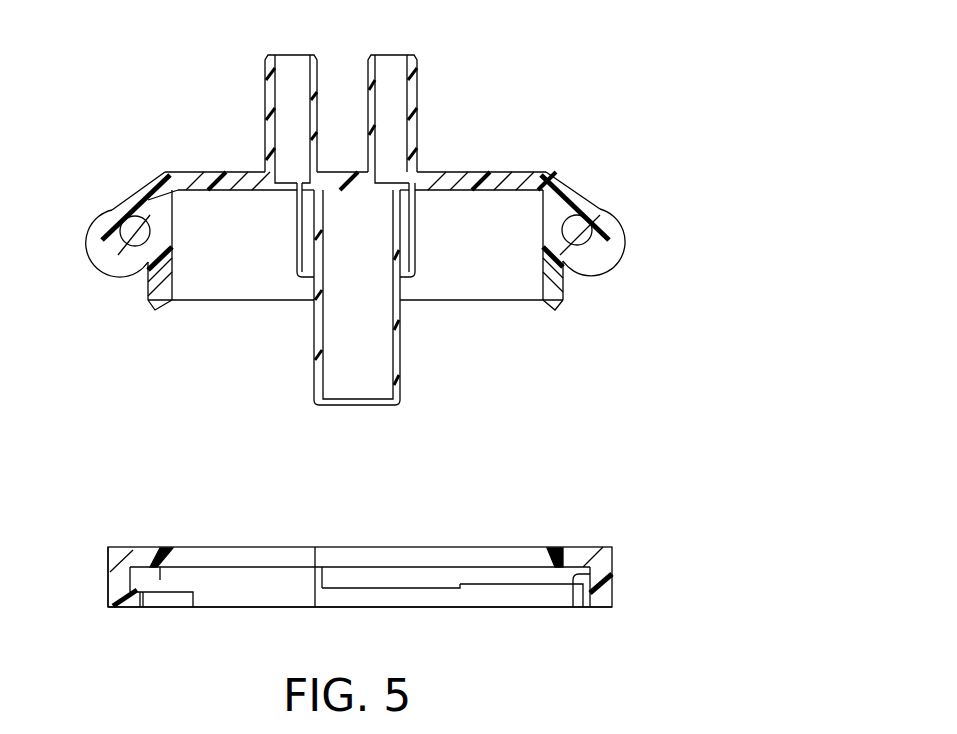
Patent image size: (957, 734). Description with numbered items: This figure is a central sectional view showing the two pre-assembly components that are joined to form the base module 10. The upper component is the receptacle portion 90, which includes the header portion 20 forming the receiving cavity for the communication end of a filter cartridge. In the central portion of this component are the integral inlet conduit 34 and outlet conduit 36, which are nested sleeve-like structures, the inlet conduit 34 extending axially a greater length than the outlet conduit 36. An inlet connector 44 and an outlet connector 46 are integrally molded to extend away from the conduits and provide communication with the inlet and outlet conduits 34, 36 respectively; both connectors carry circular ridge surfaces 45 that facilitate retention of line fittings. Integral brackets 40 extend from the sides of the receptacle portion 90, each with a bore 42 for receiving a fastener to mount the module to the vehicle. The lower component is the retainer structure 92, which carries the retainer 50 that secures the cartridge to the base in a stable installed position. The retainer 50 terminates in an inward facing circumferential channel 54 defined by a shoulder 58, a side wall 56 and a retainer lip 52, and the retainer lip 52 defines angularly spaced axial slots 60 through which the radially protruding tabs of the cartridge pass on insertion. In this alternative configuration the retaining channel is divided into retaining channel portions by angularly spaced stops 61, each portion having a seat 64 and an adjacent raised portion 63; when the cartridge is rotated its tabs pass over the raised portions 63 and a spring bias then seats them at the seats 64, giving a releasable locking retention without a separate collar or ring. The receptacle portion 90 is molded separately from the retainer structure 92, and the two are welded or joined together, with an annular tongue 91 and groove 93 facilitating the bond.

The base module 10 is at (112, 136).
The header portion 20 is at (214, 178).
The inlet conduit 34 is at (401, 382).
The outlet conduit 36 is at (418, 250).
The integral bracket 40 is at (117, 260).
The bore 42 is at (120, 222).
The inlet connector 44 is at (419, 118).
The circular ridge surfaces 45 is at (369, 62).
The outlet connector 46 is at (266, 88).
The retainer 50 is at (118, 580).
The retainer lip 52 is at (115, 610).
The circumferential channel 54 is at (118, 580).
The side wall 56 is at (144, 595).
The shoulder 58 is at (182, 568).
The axial slot 60 is at (578, 590).
The stop 61 is at (312, 545).
The raised portion 63 is at (506, 584).
The seat 64 is at (380, 587).
The receptacle portion 90 is at (727, 366).
The annular tongue 91 is at (157, 306).
The retainer structure 92 is at (608, 541).
The groove 93 is at (164, 550).